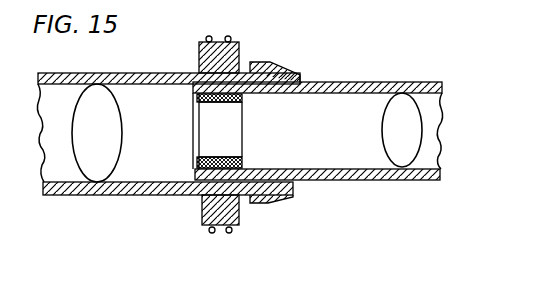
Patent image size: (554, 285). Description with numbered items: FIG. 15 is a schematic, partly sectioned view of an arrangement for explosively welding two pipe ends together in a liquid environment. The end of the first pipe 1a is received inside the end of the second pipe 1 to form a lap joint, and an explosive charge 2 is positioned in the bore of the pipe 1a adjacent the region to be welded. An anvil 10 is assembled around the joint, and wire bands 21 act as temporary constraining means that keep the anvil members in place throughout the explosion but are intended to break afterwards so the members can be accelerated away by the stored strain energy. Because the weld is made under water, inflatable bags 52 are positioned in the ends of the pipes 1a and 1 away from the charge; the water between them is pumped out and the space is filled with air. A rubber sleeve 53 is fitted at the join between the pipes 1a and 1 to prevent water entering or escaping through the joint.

The pipe 1 is at (123, 73).
The pipe 1a is at (365, 82).
The explosive charge 2 is at (227, 105).
The anvil 10 is at (202, 205).
The wire bands 21 is at (232, 230).
The inflatable bags 52 is at (122, 133).
The rubber sleeve 53 is at (280, 60).